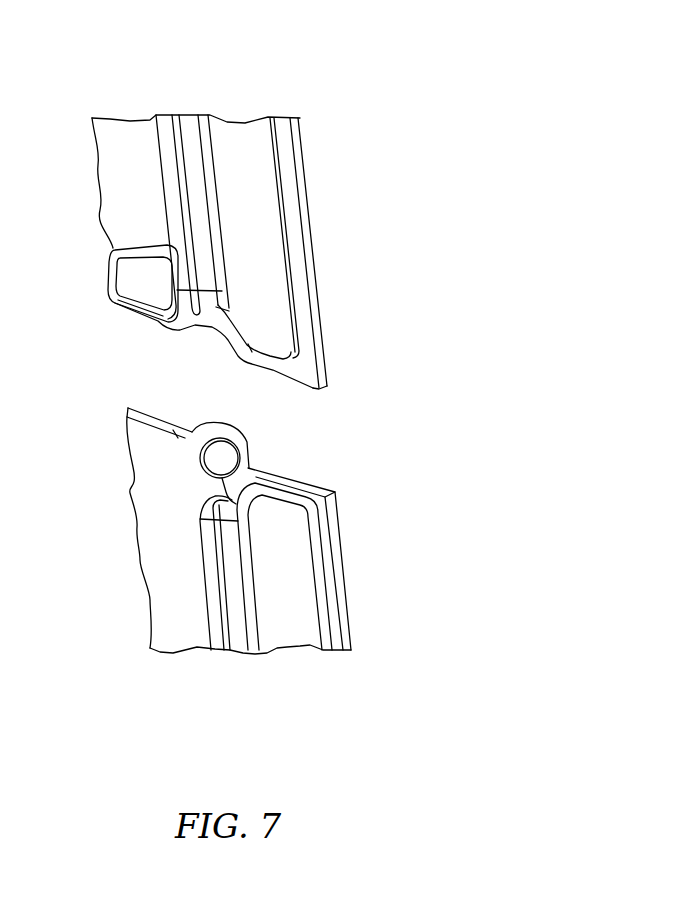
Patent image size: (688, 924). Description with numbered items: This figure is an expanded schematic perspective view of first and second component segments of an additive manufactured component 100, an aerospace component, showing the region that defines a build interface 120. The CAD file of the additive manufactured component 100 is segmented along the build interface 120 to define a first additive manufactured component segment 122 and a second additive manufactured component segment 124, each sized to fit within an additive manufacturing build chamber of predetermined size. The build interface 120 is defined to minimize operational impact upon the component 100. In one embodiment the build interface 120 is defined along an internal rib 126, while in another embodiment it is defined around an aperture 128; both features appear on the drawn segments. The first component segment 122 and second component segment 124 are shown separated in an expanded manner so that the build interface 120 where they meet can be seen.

The additive manufactured component 100 is at (381, 157).
The build interface 120 is at (303, 388).
The first additive manufactured component segment 122 is at (240, 122).
The second additive manufactured component segment 124 is at (284, 649).
The internal rib 126 is at (140, 303).
The aperture 128 is at (243, 502).